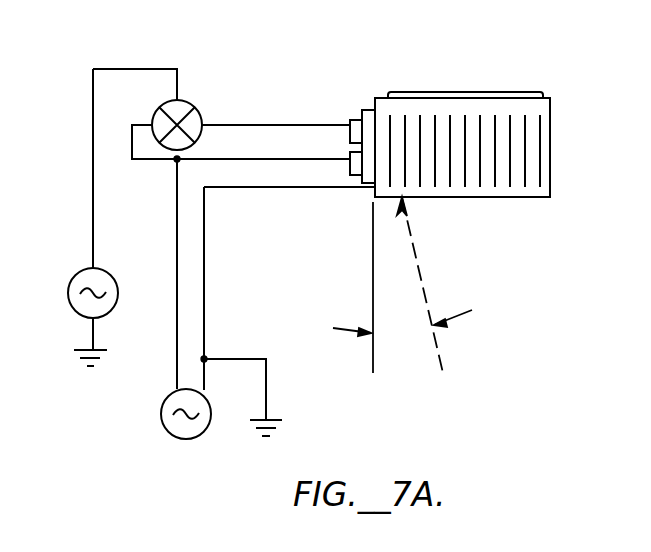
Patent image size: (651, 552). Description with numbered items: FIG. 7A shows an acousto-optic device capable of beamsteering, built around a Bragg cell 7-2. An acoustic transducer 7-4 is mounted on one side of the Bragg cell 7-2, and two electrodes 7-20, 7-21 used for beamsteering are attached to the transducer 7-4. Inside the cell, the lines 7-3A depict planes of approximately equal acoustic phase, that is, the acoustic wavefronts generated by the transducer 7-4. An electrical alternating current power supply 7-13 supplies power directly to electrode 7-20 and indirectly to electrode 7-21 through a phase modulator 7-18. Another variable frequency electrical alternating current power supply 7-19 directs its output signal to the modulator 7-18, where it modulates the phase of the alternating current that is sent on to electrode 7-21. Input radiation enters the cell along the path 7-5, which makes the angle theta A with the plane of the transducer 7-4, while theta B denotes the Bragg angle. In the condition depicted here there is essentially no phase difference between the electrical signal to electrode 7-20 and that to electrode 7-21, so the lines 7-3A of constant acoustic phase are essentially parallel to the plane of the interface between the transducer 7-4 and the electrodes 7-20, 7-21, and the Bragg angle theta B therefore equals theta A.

The Bragg cell 7-2 is at (535, 197).
The lines of approximately equal acoustic phase 7-3A is at (468, 92).
The acoustic transducer 7-4 is at (369, 110).
The path of the input radiation 7-5 is at (422, 278).
The electrical alternating current power supply 7-13 is at (165, 420).
The phase modulator 7-18 is at (192, 105).
The variable frequency electrical alternating current power supply 7-19 is at (82, 272).
The electrode 7-20 is at (348, 175).
The electrode 7-21 is at (349, 120).